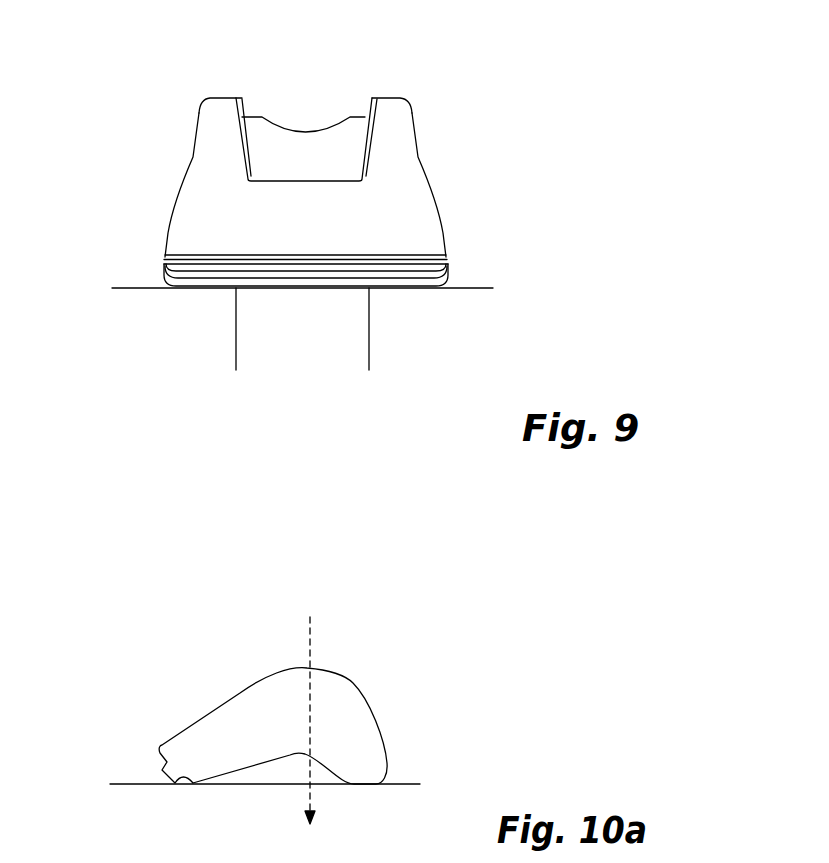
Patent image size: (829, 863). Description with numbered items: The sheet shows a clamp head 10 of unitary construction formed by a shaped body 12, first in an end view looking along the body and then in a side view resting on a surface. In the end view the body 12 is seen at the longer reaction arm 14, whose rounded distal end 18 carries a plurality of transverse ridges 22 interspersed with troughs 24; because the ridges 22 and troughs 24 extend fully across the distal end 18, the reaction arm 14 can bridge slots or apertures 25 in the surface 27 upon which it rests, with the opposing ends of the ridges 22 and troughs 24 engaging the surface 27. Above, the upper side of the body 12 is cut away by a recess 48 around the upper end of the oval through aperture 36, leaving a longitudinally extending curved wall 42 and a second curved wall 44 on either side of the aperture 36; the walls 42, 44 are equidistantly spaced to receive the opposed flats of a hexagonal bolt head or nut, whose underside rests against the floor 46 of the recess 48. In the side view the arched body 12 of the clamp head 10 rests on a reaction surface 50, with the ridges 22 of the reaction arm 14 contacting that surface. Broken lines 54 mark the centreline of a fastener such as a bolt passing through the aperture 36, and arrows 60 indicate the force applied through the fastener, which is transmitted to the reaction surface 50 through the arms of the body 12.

In FIG. 9, the clamp head 10 is at (537, 108).
In FIG. 10A, the clamp head 10 is at (402, 663).
In FIG. 9, the body 12 is at (420, 165).
In FIG. 10A, the body 12 is at (240, 693).
In FIG. 9, the reaction arm 14 is at (205, 222).
In FIG. 9, the distal end of the reaction arm 18 is at (415, 243).
In FIG. 9, the ridges 22 is at (203, 280).
In FIG. 9, the troughs 24 is at (323, 267).
In FIG. 9, the slots or apertures 25 is at (272, 330).
In FIG. 9, the surface 27 is at (143, 308).
In FIG. 9, the through aperture 36 is at (305, 132).
In FIG. 9, the curved wall 42 is at (231, 98).
In FIG. 9, the curved wall 44 is at (377, 98).
In FIG. 9, the floor of the recess 46 is at (360, 117).
In FIG. 9, the recess 48 is at (260, 147).
In FIG. 10A, the reaction surface 50 is at (138, 783).
In FIG. 10A, the broken lines 54 is at (317, 632).
In FIG. 10A, the arrows 60 is at (313, 798).